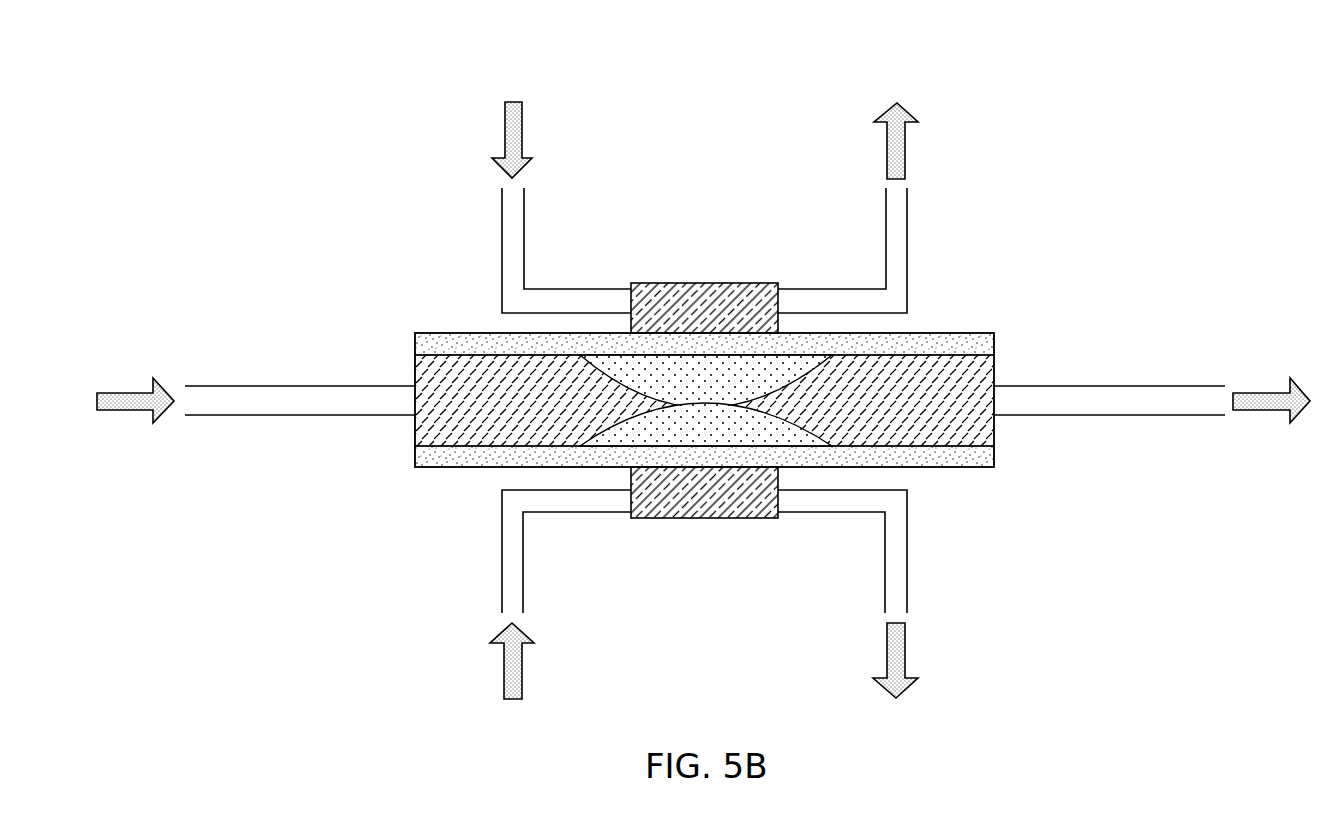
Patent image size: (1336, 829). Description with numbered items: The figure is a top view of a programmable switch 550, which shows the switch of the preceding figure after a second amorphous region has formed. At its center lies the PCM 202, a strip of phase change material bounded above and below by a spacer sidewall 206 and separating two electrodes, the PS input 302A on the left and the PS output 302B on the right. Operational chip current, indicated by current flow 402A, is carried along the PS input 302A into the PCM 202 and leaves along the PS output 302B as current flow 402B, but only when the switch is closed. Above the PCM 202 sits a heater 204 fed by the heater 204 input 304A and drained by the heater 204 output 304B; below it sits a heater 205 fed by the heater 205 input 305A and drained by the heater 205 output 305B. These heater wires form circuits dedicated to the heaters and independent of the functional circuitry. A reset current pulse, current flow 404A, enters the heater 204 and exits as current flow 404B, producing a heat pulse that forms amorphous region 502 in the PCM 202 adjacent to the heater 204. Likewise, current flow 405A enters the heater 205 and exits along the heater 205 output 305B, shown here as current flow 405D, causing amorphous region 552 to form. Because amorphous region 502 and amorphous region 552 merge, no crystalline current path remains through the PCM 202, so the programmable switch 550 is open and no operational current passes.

The programmable switch 550 is at (298, 90).
The PCM 202 is at (500, 415).
The heater 204 is at (728, 320).
The heater 205 is at (728, 504).
The spacer sidewall 206 is at (993, 342).
The amorphous region 502 is at (728, 390).
The amorphous region 552 is at (728, 438).
The PS input 302A is at (241, 386).
The PS output 302B is at (1155, 415).
The heater 204 input 304A is at (524, 200).
The heater 204 output 304B is at (907, 222).
The heater 205 input 305A is at (523, 578).
The heater 205 output 305B is at (907, 570).
The current flow 402A is at (124, 411).
The current flow 402B is at (1262, 392).
The current flow 404A is at (522, 130).
The current flow 404B is at (905, 151).
The current flow 405A is at (522, 672).
The lower right flow direction arrow 405D is at (905, 652).